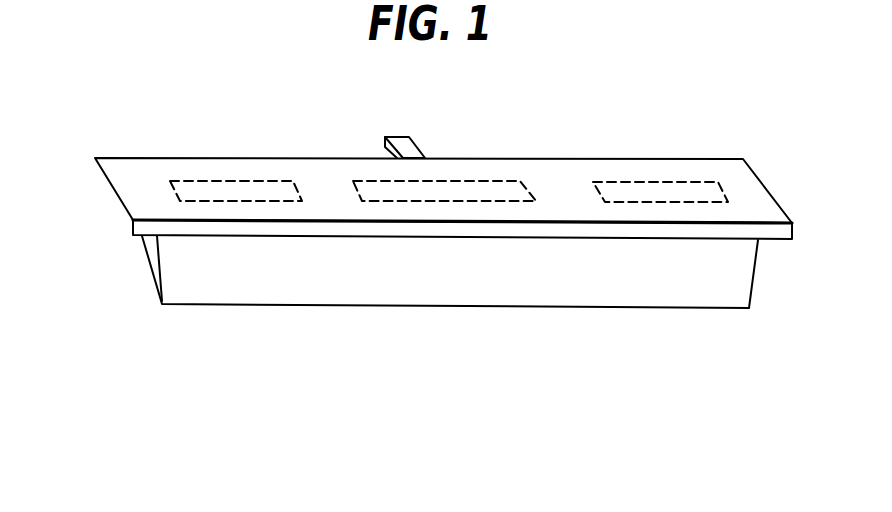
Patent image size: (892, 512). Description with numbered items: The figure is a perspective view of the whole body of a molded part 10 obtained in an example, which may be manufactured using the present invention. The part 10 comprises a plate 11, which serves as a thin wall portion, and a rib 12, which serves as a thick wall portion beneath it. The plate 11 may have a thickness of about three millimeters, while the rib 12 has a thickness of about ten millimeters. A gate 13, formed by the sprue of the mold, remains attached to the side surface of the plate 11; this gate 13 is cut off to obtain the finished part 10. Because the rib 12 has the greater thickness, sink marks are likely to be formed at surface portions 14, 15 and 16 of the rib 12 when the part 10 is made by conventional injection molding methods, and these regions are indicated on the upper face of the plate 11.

The part 10 is at (590, 122).
The plate 11 is at (145, 157).
The rib 12 is at (150, 283).
The gate 13 is at (387, 136).
The surface portion 14 is at (245, 184).
The surface portion 15 is at (472, 182).
The surface portion 16 is at (652, 182).